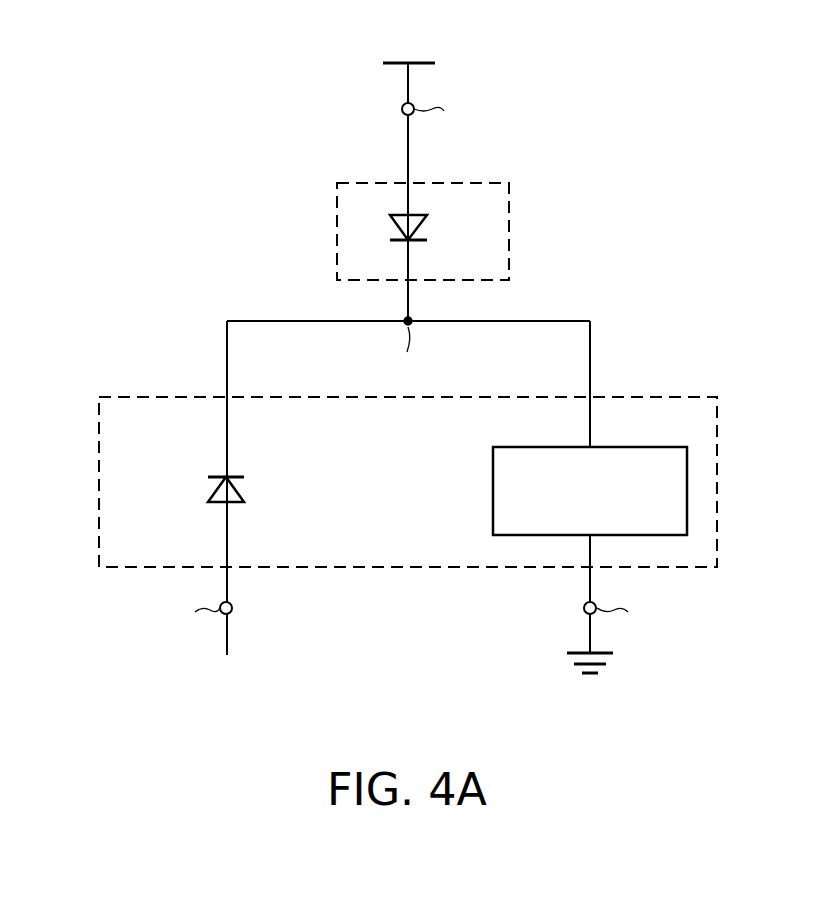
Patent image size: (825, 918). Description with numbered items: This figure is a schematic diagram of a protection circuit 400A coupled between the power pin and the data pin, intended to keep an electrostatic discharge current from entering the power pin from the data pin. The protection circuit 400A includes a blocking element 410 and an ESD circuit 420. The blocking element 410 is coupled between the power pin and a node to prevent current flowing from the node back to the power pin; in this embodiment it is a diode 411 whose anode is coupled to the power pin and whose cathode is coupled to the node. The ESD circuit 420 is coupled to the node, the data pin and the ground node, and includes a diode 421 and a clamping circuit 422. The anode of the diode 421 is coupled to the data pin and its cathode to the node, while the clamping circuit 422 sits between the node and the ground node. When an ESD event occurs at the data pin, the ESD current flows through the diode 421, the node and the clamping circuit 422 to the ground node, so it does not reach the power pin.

The protection circuit 400A is at (760, 44).
The blocking element 410 is at (511, 232).
The diode 411 is at (418, 228).
The ESD circuit 420 is at (719, 480).
The diode 421 is at (208, 487).
The clamping circuit 422 is at (493, 447).